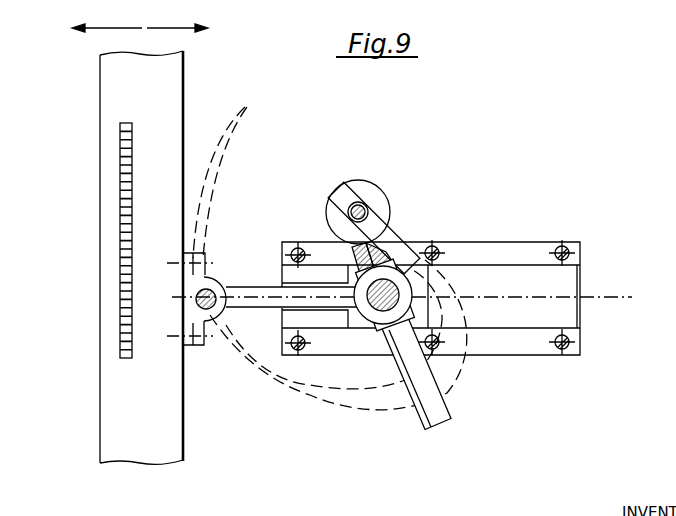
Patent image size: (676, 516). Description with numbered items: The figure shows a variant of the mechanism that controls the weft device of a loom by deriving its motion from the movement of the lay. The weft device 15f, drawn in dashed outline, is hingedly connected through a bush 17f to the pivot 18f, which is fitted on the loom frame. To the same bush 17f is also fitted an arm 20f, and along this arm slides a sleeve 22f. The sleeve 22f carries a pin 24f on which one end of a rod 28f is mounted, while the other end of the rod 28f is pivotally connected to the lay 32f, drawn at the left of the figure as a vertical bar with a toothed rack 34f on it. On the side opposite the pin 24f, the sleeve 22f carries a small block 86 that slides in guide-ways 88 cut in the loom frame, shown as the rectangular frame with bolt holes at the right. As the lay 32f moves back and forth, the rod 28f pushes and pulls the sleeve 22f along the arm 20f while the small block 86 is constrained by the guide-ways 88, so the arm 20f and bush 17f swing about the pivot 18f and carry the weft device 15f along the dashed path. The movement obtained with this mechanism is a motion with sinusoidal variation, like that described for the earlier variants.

The weft device 15f is at (310, 390).
The bush 17f is at (365, 192).
The pivot 18f is at (368, 208).
The arm 20f is at (432, 430).
The sleeve 22f is at (382, 335).
The pin 24f is at (358, 278).
The rod 28f is at (252, 293).
The lay 32f is at (128, 402).
The rack 34f is at (123, 325).
The small block 86 is at (432, 262).
The guide-ways 88 is at (530, 263).